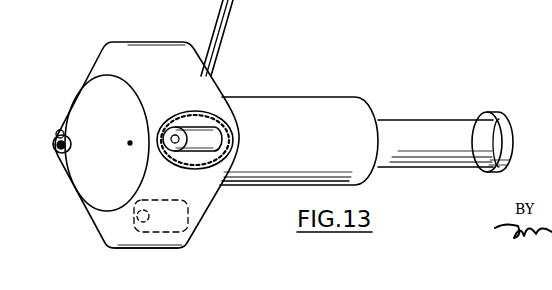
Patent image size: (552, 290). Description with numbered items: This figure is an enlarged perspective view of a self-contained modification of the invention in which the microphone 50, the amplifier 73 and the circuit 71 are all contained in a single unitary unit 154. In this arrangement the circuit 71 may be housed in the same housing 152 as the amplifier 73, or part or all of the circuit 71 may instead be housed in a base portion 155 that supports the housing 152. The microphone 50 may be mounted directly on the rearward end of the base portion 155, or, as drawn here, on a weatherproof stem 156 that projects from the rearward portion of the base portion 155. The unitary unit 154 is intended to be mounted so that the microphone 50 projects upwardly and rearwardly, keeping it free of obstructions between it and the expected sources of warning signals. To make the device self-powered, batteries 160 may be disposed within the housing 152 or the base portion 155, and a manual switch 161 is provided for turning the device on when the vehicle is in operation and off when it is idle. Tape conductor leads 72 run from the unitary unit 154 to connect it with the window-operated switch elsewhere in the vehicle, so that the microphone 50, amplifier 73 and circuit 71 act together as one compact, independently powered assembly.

The microphone 50 is at (511, 143).
The circuit 71 is at (90, 55).
The tape conductor leads 72 is at (218, 33).
The amplifier 73 is at (97, 182).
The housing 152 is at (158, 240).
The unitary unit 154 is at (322, 107).
The base portion 155 is at (275, 178).
The weatherproof stem 156 is at (438, 157).
The batteries 160 is at (208, 133).
The manual switch 161 is at (54, 147).